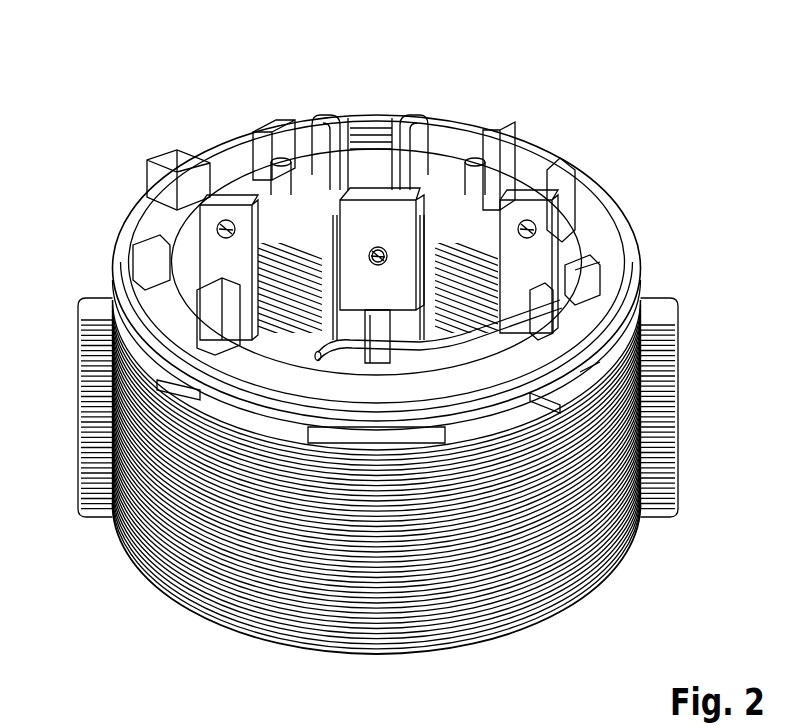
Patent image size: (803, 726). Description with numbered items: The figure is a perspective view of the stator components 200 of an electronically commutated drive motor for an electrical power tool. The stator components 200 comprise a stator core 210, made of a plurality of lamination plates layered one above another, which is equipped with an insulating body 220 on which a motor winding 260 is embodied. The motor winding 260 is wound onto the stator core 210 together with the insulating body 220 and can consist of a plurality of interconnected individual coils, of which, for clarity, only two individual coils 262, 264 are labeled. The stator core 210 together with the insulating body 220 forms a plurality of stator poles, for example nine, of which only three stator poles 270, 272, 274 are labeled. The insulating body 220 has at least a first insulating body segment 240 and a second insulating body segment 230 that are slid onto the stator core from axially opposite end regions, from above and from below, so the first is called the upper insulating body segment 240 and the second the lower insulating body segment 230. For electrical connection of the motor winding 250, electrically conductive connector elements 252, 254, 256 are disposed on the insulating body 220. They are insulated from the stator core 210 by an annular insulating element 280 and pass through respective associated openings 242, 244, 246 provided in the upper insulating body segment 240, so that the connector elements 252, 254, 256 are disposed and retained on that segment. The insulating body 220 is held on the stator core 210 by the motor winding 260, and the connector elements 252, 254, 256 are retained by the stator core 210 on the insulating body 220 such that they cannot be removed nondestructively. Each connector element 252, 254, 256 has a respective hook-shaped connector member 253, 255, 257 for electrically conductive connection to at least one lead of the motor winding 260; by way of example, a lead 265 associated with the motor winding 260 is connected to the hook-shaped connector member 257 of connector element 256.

The stator components 200 is at (120, 100).
The stator core 210 is at (662, 352).
The insulating body 220 is at (475, 102).
The second insulating body segment 230 is at (500, 637).
The first insulating body segment 240 is at (285, 147).
The opening 242 is at (103, 346).
The opening 244 is at (385, 358).
The opening 246 is at (590, 375).
The motor winding 250 is at (370, 198).
The connector element 252 is at (213, 243).
The hook-shaped connector member 253 is at (207, 300).
The connector element 254 is at (398, 253).
The hook-shaped connector member 255 is at (380, 330).
The connector element 256 is at (545, 218).
The hook-shaped connector member 257 is at (548, 300).
The motor winding 260 is at (313, 173).
The individual coil 262 is at (425, 187).
The individual coil 264 is at (598, 255).
The lead 265 is at (563, 243).
The stator pole 270 is at (227, 166).
The stator pole 272 is at (352, 181).
The stator pole 274 is at (578, 267).
The insulating element 280 is at (378, 445).